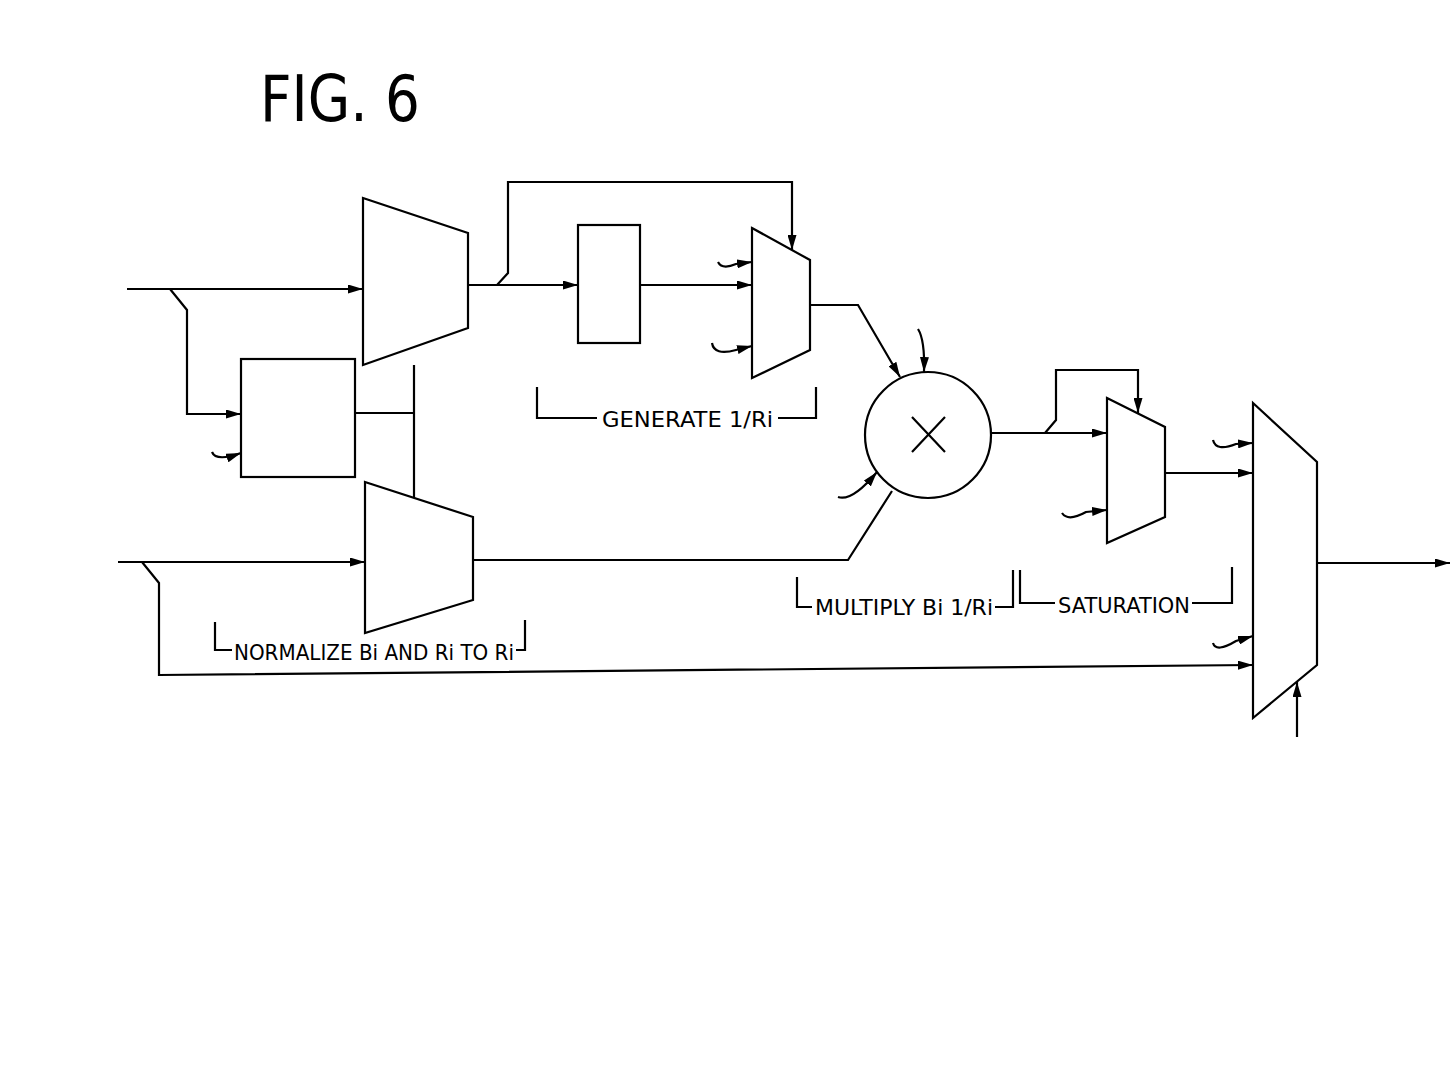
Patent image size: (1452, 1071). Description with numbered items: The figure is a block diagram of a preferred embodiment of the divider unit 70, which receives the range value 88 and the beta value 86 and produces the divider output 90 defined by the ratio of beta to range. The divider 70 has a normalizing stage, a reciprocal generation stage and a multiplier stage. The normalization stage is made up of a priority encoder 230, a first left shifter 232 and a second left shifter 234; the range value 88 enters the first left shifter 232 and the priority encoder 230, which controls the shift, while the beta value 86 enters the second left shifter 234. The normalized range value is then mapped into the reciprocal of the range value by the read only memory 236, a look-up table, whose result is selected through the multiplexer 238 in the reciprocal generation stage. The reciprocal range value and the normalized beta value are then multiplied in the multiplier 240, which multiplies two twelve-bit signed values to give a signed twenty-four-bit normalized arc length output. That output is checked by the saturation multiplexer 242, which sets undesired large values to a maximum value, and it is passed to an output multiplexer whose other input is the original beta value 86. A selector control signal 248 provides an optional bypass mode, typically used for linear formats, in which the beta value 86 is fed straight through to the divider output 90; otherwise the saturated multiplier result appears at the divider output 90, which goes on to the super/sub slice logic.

The divider unit 70 is at (947, 192).
The beta value 86 is at (685, 601).
The range value 88 is at (146, 289).
The divider output 90 is at (1384, 596).
The priority encoder 230 is at (302, 418).
The first left shifter 232 is at (470, 348).
The second left shifter 234 is at (628, 557).
The read only memory 236 is at (644, 262).
The multiplexer 238 is at (797, 301).
The multiplier 240 is at (971, 404).
The saturation multiplexer 242 is at (1130, 470).
The selector control signal 248 is at (1273, 598).